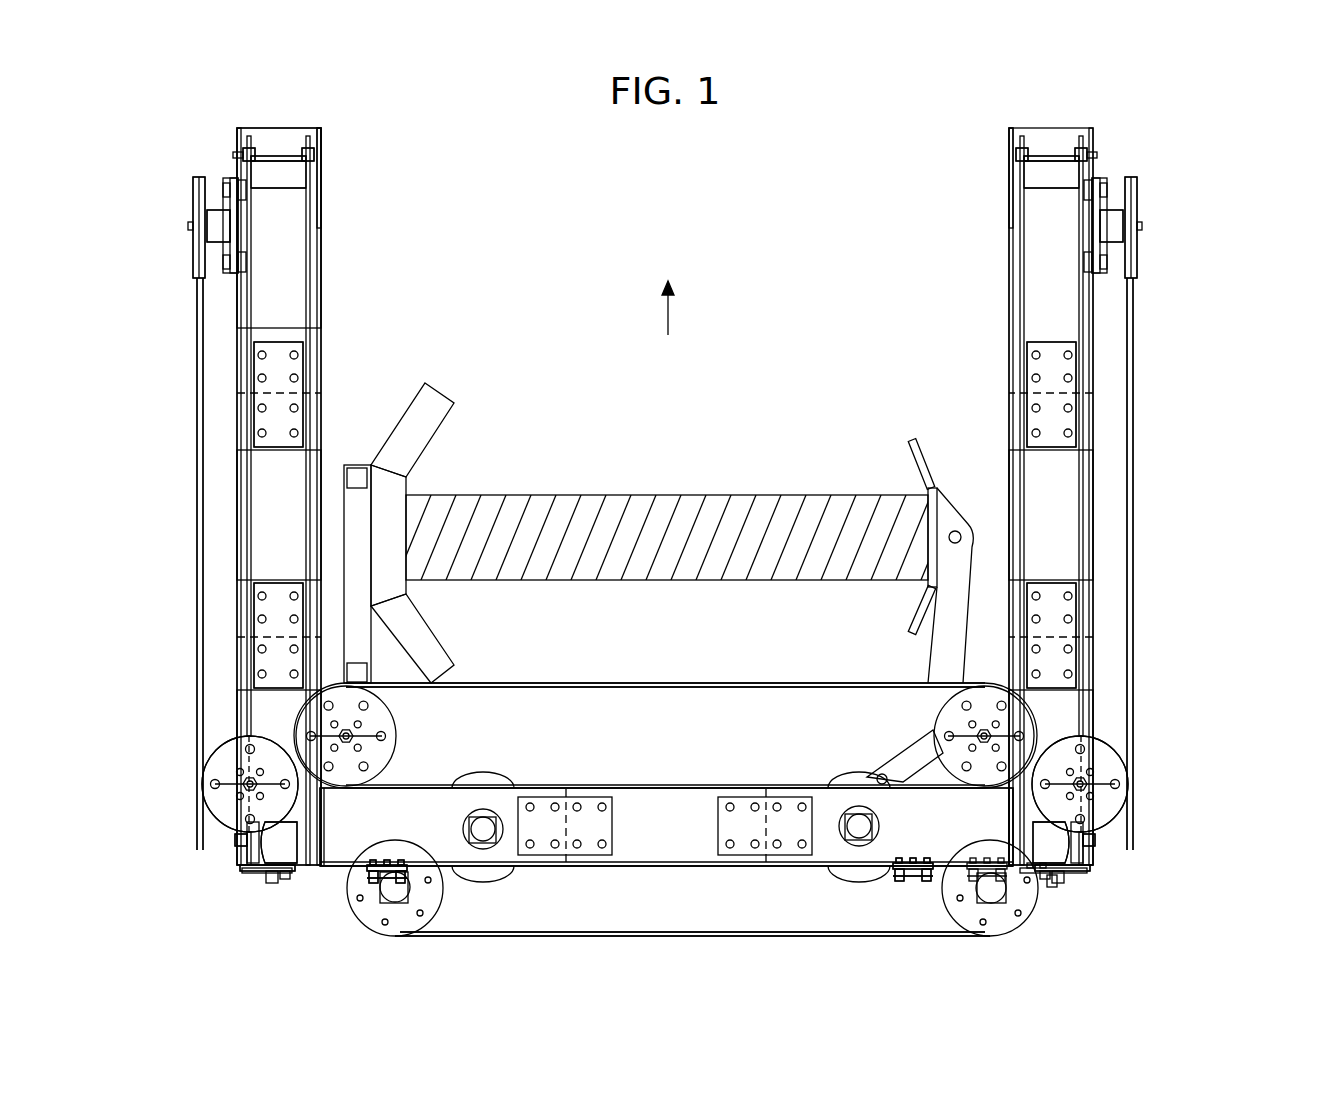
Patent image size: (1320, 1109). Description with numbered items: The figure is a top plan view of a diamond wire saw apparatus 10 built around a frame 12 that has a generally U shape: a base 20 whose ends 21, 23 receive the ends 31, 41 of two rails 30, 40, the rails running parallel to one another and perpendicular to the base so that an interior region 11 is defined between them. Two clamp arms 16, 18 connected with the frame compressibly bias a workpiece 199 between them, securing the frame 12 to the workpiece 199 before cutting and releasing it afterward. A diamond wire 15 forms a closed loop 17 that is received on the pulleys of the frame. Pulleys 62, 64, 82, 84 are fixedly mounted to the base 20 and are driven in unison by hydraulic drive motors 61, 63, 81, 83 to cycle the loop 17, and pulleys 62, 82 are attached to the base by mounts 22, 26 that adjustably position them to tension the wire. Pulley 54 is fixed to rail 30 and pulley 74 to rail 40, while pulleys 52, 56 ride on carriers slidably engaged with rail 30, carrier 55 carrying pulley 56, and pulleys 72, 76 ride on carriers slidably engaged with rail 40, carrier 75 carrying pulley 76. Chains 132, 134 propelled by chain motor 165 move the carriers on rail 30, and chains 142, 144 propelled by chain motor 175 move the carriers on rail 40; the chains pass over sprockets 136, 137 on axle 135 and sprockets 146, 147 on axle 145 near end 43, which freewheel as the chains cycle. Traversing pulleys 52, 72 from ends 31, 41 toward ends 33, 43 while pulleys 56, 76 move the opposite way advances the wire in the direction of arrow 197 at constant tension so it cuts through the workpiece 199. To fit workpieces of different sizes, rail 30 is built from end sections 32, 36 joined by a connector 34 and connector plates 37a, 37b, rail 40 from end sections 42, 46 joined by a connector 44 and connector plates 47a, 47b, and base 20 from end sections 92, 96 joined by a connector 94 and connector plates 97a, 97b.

The diamond wire saw apparatus 10 is at (1230, 132).
The interior region 11 is at (830, 425).
The frame 12 is at (260, 525).
The diamond wire 15 is at (512, 683).
The clamp arm 16 is at (440, 398).
The closed loop 17 is at (665, 683).
The clamp arm 18 is at (912, 440).
The base 20 is at (670, 867).
The end of base 21 is at (1085, 862).
The mount 22 is at (905, 880).
The end of base 23 is at (245, 863).
The mount 26 is at (375, 882).
The rail 30 is at (1055, 266).
The end of rail 31 is at (1045, 825).
The end section 32 is at (1068, 707).
The end of rail 33 is at (1010, 130).
The connector 34 is at (1070, 540).
The end section 36 is at (1048, 212).
The connector plate 37a is at (1068, 607).
The connector plate 37b is at (1068, 415).
The rail 40 is at (275, 266).
The end of rail 41 is at (290, 840).
The end section 42 is at (262, 707).
The end of rail 43 is at (320, 130).
The connector 44 is at (256, 556).
The end section 46 is at (282, 212).
The connector plate 47a is at (262, 607).
The connector plate 47b is at (262, 415).
The pulley 52 is at (920, 742).
The pulley 54 is at (1095, 765).
The carrier 55 is at (1098, 185).
The pulley 56 is at (1135, 200).
The hydraulic drive motor 61 is at (998, 890).
The pulley 62 is at (990, 936).
The hydraulic drive motor 63 is at (880, 826).
The pulley 64 is at (855, 877).
The pulley 72 is at (397, 736).
The pulley 74 is at (236, 764).
The carrier 75 is at (232, 185).
The pulley 76 is at (195, 200).
The hydraulic drive motor 81 is at (390, 890).
The pulley 82 is at (395, 936).
The hydraulic drive motor 83 is at (462, 830).
The pulley 84 is at (480, 877).
The end section 92 is at (822, 795).
The connector 94 is at (665, 803).
The end section 96 is at (513, 790).
The connector plate 97a is at (750, 856).
The connector plate 97b is at (588, 856).
The chain 132 is at (1085, 282).
The chain 134 is at (1072, 318).
The axle 135 is at (1052, 156).
The sprocket 136 is at (1028, 150).
The sprocket 137 is at (1072, 150).
The chain 142 is at (248, 280).
The chain 144 is at (258, 318).
The axle 145 is at (278, 156).
The sprocket 146 is at (300, 150).
The sprocket 147 is at (258, 150).
The chain motor 165 is at (1052, 876).
The chain motor 175 is at (285, 880).
The arrow 197 is at (668, 315).
The workpiece 199 is at (665, 494).